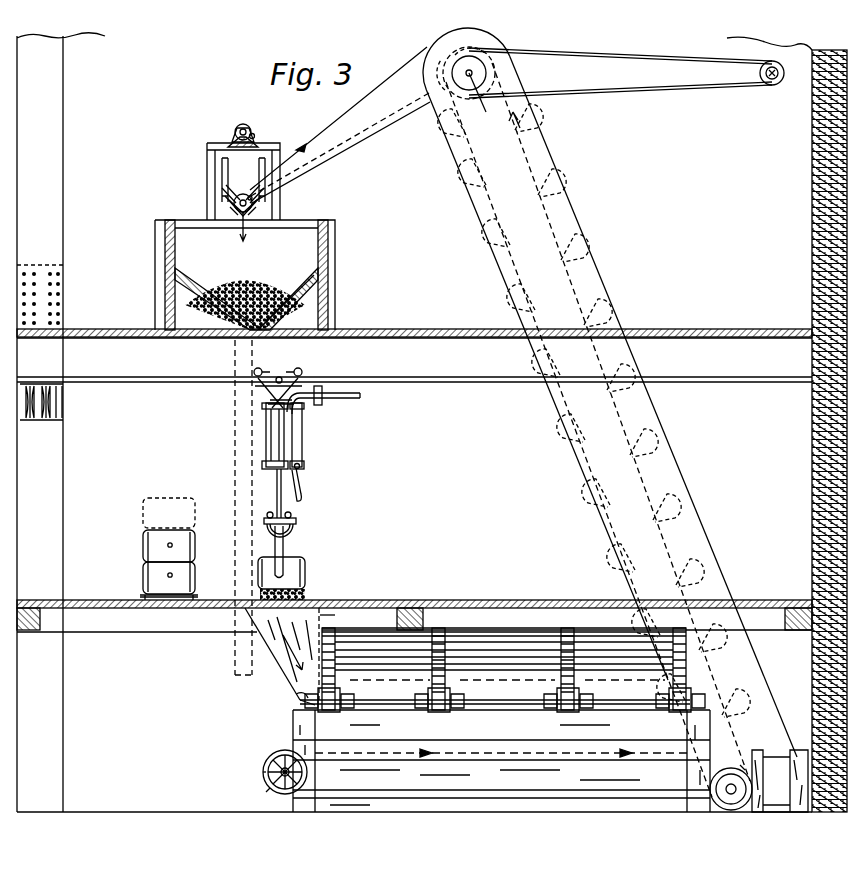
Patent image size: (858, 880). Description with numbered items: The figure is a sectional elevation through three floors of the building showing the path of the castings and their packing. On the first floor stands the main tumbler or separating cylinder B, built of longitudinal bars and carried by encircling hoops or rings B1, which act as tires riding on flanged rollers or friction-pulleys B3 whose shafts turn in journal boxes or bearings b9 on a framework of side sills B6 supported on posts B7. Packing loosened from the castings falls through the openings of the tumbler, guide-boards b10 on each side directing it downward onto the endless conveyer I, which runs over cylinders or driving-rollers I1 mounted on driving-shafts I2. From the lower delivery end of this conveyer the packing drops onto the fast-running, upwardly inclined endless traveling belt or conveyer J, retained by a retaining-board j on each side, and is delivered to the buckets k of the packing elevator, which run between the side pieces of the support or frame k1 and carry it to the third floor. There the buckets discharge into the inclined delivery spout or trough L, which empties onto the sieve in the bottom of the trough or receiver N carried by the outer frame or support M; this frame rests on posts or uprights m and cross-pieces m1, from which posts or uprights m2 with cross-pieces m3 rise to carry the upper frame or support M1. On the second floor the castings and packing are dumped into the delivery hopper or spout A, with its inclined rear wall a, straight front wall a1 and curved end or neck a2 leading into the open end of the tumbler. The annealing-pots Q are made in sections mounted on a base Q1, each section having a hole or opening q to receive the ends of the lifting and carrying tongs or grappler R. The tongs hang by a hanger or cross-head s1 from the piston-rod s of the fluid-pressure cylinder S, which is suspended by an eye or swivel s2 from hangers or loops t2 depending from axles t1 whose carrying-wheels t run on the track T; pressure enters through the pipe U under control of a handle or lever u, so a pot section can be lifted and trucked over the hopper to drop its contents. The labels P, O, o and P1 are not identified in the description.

The support or frame k1 is at (690, 492).
The buckets k is at (706, 588).
The delivery spout or trough L is at (340, 125).
The posts or uprights m is at (330, 288).
The cross-pieces m1 is at (322, 222).
The material in hopper P is at (245, 284).
The posts or uprights m2 is at (208, 176).
The cross-pieces m3 is at (230, 142).
The upper frame or support M1 is at (252, 130).
The pulley O is at (243, 124).
The pulley pin o is at (252, 130).
The outer frame or support M is at (262, 208).
The trough or receiver N is at (226, 212).
The discharge chute (P') P1 is at (236, 456).
The track T is at (301, 381).
The axles t1 is at (313, 358).
The carrying-wheels t is at (282, 359).
The hangers or loops t2 is at (282, 366).
The eye or swivel s2 is at (275, 397).
The fluid-pressure cylinder S is at (279, 436).
The pipe U is at (323, 401).
The handle or lever u is at (302, 483).
The piston-rod s is at (283, 499).
The hanger or cross-head s1 is at (298, 524).
The lifting and carrying tongs or grappler R is at (284, 550).
The annealing-pots Q is at (306, 567).
The base Q1 is at (192, 596).
The hole or opening q is at (172, 545).
The delivery hopper or spout A is at (282, 654).
The inclined rear wall a is at (290, 649).
The straight front wall a1 is at (332, 617).
The curved end or neck a2 is at (296, 696).
The main tumbler or separating cylinder B is at (512, 640).
The encircling hoops or rings B1 is at (336, 630).
The side sills B6 is at (495, 714).
The flanged rollers or friction-pulleys B3 is at (340, 700).
The journal boxes or bearings b9 is at (505, 698).
The guide-boards b10 is at (507, 681).
The posts B7 is at (501, 761).
The endless conveyer I is at (286, 756).
The cylinders or driving-rollers I1 is at (264, 770).
The driving-shafts I2 is at (270, 784).
The endless traveling belt or conveyer J is at (780, 781).
The retaining-board j is at (768, 787).